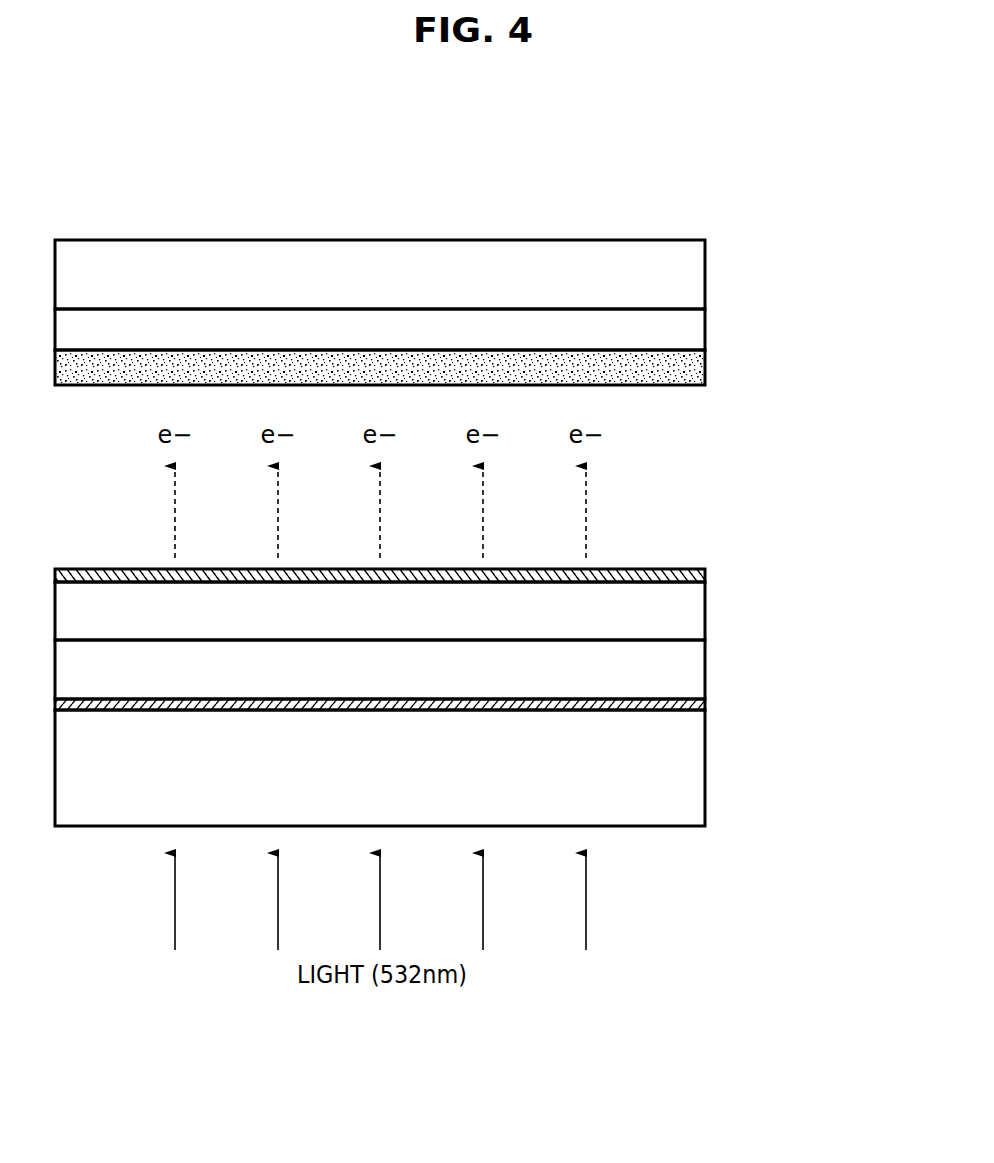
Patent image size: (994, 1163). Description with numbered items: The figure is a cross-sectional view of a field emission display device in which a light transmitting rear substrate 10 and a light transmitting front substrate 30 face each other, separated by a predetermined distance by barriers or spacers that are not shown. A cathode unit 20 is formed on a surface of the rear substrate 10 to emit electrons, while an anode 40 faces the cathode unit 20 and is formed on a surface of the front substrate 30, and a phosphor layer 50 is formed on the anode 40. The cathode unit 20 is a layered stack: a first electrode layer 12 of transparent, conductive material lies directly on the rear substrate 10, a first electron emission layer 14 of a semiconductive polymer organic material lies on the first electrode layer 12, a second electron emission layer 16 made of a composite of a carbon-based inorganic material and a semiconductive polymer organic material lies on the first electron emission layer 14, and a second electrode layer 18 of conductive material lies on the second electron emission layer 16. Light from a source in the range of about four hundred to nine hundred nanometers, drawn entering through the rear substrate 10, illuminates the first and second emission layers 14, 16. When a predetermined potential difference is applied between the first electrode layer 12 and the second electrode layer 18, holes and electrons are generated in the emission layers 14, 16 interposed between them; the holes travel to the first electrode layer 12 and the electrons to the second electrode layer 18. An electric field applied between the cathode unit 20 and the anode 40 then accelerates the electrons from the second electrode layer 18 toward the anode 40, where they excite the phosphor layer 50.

The rear substrate 10 is at (698, 776).
The first electrode layer 12 is at (417, 703).
The first electron emission layer 14 is at (698, 666).
The second electron emission layer 16 is at (698, 605).
The second electrode layer 18 is at (700, 576).
The cathode unit 20 is at (482, 638).
The front substrate 30 is at (698, 276).
The anode 40 is at (698, 330).
The phosphor layer 50 is at (698, 368).